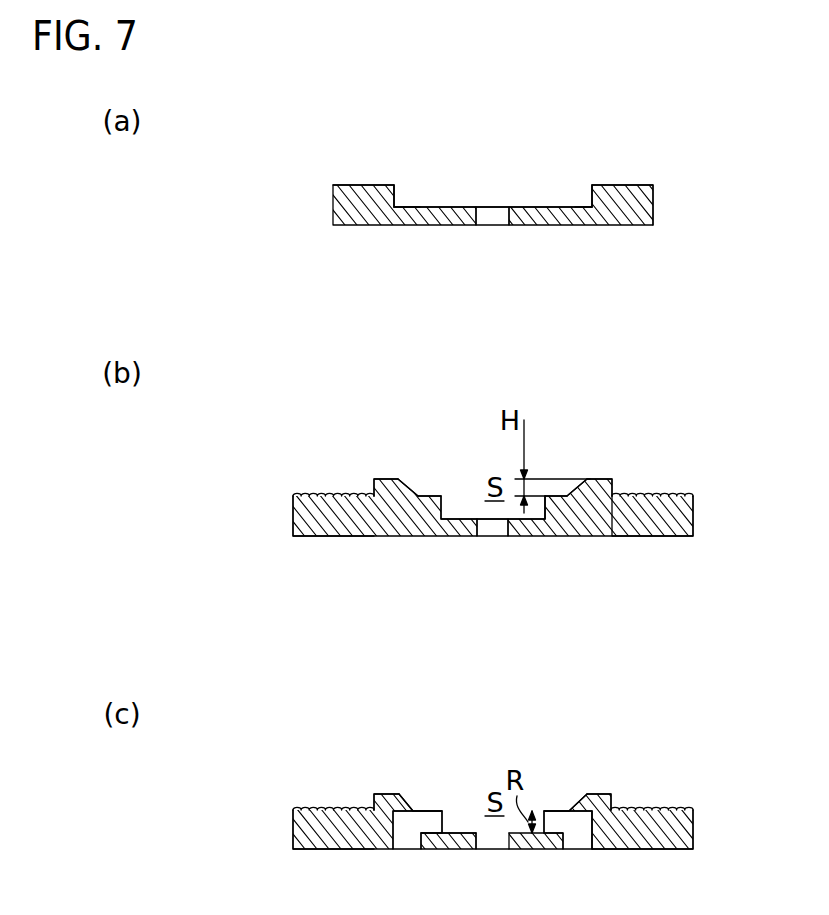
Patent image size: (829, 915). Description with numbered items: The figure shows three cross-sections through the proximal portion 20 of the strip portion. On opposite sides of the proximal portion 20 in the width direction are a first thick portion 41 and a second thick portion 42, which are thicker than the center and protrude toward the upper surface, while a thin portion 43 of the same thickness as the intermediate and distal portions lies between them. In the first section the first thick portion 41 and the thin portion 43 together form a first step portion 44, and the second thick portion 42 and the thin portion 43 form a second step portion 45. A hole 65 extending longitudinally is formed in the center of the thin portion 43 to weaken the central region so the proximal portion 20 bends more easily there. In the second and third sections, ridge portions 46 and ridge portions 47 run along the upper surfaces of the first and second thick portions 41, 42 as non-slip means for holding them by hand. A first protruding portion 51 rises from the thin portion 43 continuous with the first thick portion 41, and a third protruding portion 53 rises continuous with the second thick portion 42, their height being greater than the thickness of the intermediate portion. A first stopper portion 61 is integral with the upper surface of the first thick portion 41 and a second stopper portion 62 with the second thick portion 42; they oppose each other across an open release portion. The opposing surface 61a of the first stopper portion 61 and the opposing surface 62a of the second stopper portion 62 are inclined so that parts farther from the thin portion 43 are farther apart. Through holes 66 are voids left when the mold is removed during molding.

The proximal portion 20 is at (333, 185).
The first thick portion 41 is at (620, 185).
The second thick portion 42 is at (367, 185).
The thin portion 43 is at (457, 207).
The first step portion 44 is at (592, 207).
The second step portion 45 is at (396, 207).
The ridge portions 46 is at (655, 496).
The ridge portions 47 is at (325, 496).
The first protruding portion 51 is at (553, 496).
The third protruding portion 53 is at (425, 496).
The first stopper portion 61 is at (601, 479).
The opposing surface 61a is at (574, 488).
The second stopper portion 62 is at (387, 479).
The opposing surface 62a is at (410, 488).
The hole 65 is at (503, 222).
The through holes 66 is at (396, 842).